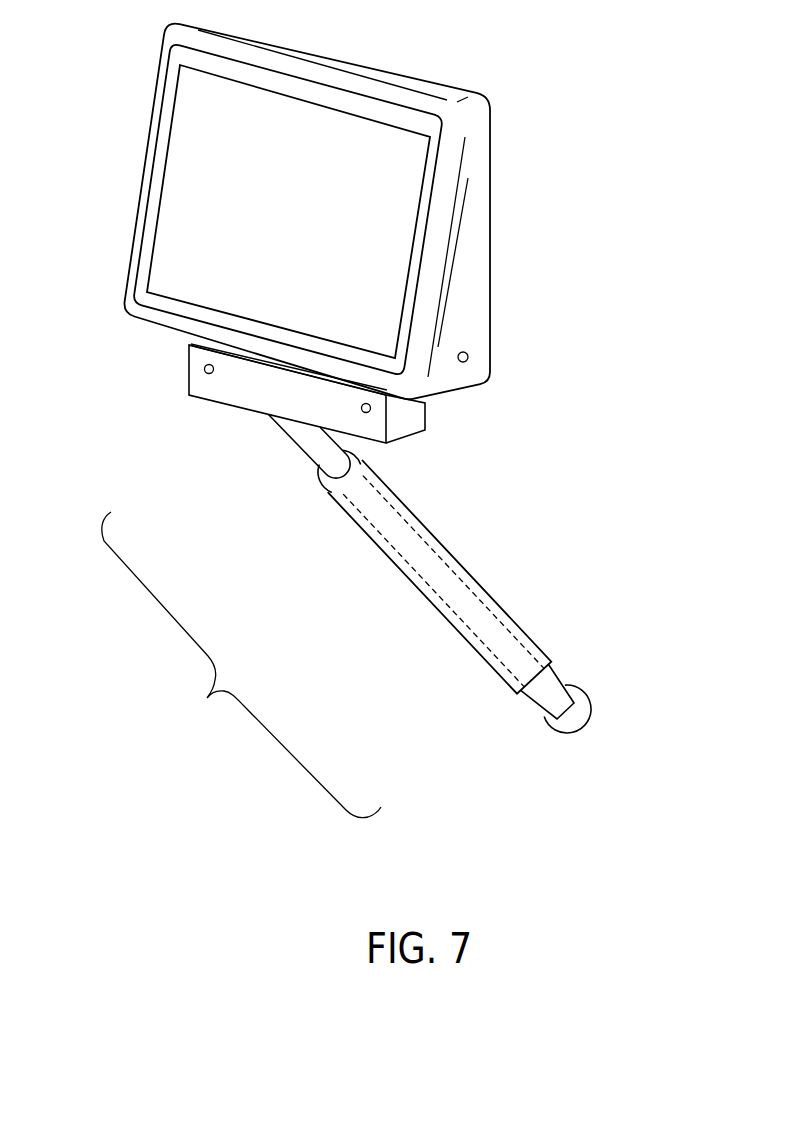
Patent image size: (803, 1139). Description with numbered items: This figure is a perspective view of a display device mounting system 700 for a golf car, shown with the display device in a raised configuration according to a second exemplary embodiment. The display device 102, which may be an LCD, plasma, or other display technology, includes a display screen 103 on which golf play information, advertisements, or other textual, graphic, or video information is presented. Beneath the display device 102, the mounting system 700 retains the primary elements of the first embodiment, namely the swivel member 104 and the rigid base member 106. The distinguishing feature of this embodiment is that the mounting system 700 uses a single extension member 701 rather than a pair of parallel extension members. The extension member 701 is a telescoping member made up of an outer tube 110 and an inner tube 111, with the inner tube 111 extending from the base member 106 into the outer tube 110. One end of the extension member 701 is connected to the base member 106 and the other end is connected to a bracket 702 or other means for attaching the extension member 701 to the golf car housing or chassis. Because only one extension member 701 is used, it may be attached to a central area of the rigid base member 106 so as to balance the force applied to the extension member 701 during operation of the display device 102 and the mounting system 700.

The mounting system 700 is at (662, 88).
The display device 102 is at (478, 283).
The display screen 103 is at (193, 210).
The swivel member 104 is at (268, 362).
The rigid base member 106 is at (235, 379).
The inner tube 111 is at (305, 442).
The outer tube 110 is at (485, 587).
The bracket 702 is at (584, 697).
The extension member 701 is at (241, 665).